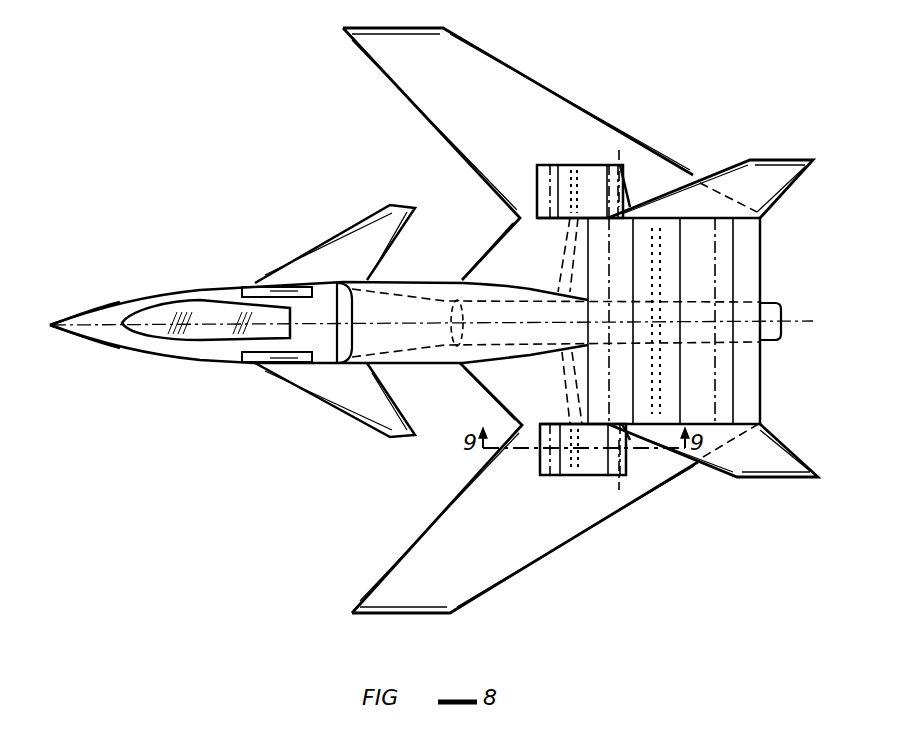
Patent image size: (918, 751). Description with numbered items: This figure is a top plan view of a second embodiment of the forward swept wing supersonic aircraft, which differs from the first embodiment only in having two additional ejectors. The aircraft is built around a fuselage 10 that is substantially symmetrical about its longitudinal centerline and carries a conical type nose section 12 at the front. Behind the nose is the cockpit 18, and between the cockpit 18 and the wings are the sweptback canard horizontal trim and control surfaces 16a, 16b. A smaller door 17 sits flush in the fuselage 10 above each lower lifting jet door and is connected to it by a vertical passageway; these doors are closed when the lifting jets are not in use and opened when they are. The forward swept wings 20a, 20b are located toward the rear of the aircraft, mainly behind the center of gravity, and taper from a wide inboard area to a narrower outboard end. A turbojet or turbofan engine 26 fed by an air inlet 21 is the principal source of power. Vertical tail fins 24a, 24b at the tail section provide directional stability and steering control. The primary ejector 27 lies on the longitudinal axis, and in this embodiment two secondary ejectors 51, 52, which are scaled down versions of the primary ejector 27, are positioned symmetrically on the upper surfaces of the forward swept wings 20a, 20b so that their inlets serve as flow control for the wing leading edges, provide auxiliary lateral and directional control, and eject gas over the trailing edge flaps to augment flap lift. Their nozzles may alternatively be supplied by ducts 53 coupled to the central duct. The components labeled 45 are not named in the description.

The fuselage 10 is at (428, 283).
The nose section 12 is at (95, 312).
The canard horizontal trim and control surface 16a is at (358, 395).
The canard horizontal trim and control surface 16b is at (345, 250).
The door 17 is at (267, 357).
The cockpit 18 is at (155, 333).
The forward swept wing 20a is at (430, 573).
The forward swept wing 20b is at (417, 82).
The air inlet 21 is at (348, 338).
The vertical tail fin 24a is at (747, 457).
The vertical tail fin 24b is at (750, 172).
The turbojet or turbofan engine 26 is at (443, 347).
The primary ejector 27 is at (700, 372).
The fins 45 is at (622, 165).
The secondary ejector 51 is at (588, 458).
The secondary ejector 52 is at (585, 182).
The ducts 53 is at (560, 272).